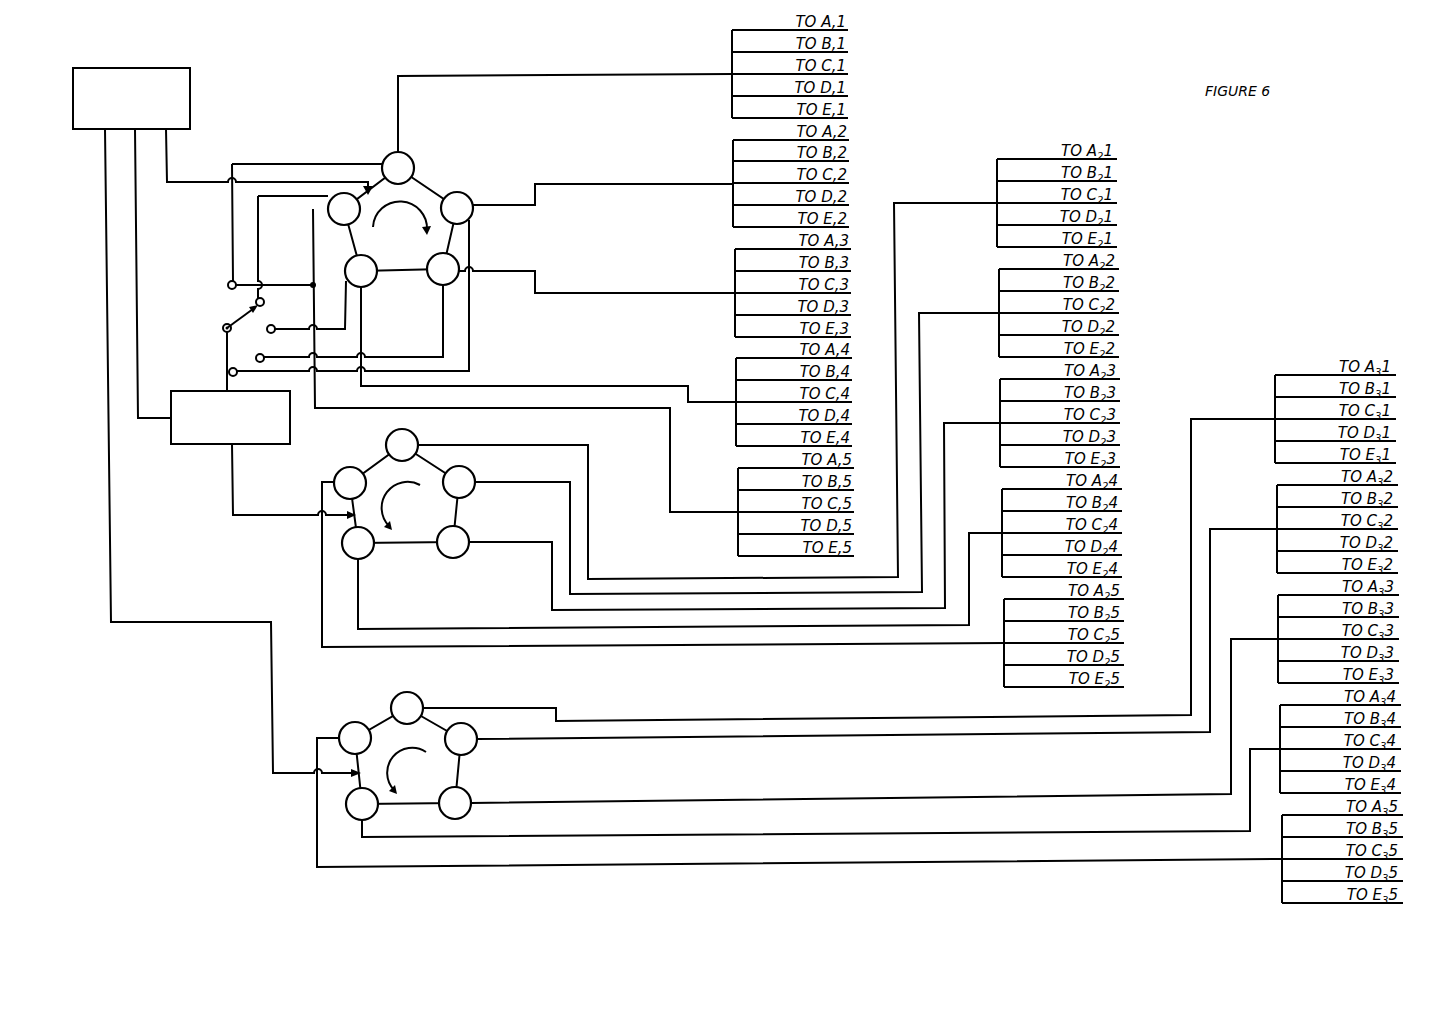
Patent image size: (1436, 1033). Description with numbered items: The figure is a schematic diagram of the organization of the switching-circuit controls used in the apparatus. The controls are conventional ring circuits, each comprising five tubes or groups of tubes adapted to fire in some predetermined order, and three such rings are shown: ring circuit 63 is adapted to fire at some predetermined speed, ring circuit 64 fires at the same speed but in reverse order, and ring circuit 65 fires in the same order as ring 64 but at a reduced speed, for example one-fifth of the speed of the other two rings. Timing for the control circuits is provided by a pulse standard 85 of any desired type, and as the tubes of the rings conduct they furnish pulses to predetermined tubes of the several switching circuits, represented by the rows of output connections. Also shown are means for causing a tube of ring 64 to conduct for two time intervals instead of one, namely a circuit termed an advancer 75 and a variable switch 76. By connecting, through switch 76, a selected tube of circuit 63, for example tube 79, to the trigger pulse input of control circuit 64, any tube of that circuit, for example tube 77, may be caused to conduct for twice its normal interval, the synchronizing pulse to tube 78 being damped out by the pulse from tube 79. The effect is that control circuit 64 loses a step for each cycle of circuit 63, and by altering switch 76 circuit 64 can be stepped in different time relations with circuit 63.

The pulse standard 85 is at (162, 68).
The advancer 75 is at (276, 446).
The variable switch 76 is at (238, 319).
The ring circuit 63 is at (400, 227).
The ring circuit 64 is at (404, 504).
The ring circuit 65 is at (408, 756).
The tube of ring circuit 64 77 is at (361, 466).
The tube of ring circuit 64 78 is at (362, 560).
The tube of ring circuit 63 79 is at (371, 284).